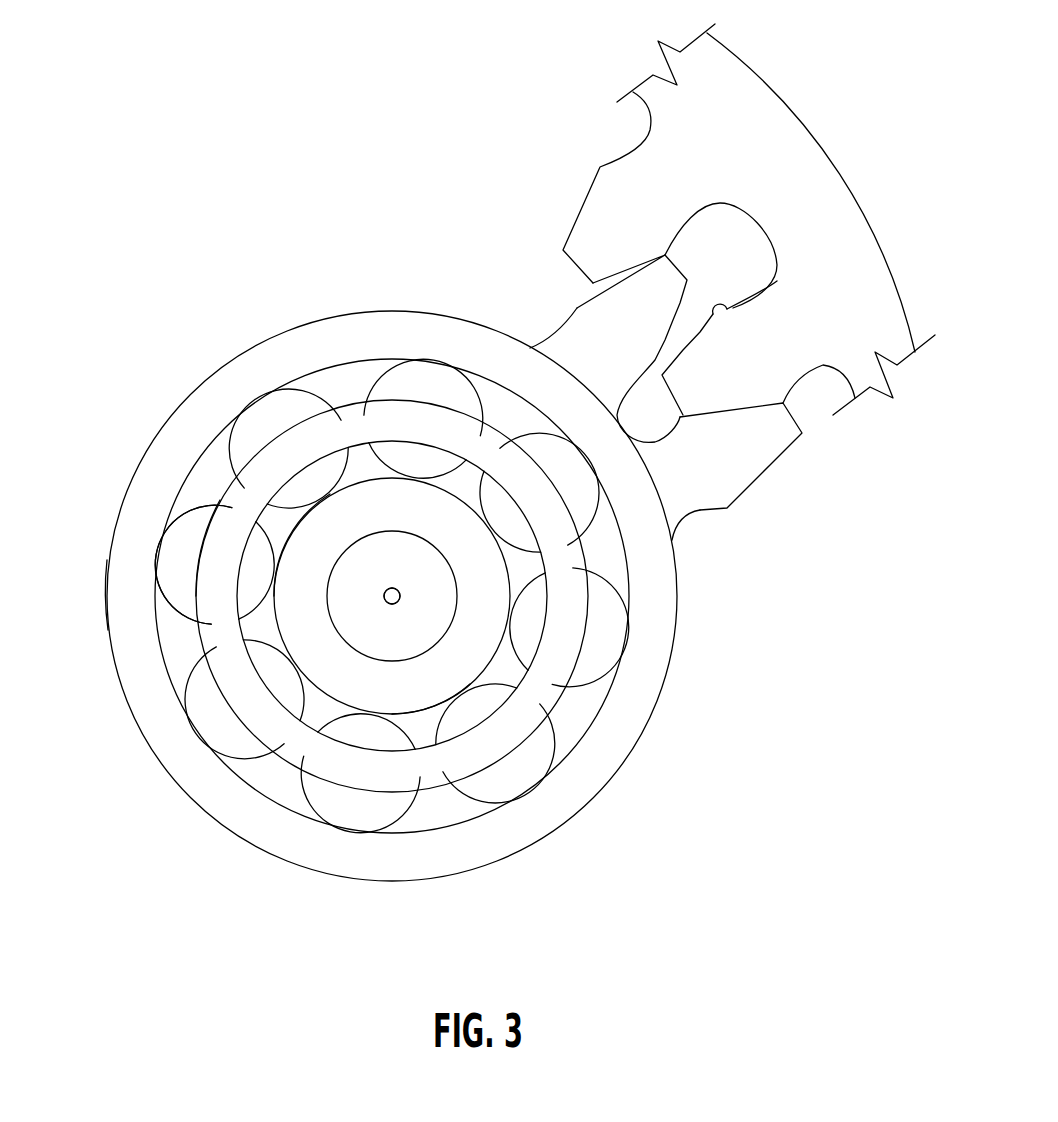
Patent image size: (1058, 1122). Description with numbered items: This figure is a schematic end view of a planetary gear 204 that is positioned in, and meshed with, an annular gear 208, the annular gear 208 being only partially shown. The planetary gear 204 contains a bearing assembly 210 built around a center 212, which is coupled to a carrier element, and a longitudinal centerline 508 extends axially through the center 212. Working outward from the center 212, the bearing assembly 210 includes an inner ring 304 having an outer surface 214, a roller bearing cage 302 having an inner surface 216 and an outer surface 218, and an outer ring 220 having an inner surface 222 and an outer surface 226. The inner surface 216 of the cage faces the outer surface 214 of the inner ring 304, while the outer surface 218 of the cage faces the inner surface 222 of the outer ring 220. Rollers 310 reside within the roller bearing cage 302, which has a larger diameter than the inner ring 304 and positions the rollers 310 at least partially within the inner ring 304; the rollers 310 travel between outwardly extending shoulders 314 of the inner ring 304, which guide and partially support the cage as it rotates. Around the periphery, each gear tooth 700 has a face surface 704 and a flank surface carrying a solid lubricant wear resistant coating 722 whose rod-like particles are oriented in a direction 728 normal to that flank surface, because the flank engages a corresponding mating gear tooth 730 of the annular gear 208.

The planetary gear 204 is at (348, 311).
The annular gear 208 is at (607, 125).
The bearing assembly 210 is at (578, 715).
The center 212 is at (388, 605).
The outer surface 214 is at (318, 700).
The inner surface 216 is at (422, 732).
The outer surface 218 is at (450, 780).
The outer ring 220 is at (185, 428).
The inner surface 222 is at (172, 656).
The outer surface 226 is at (105, 577).
The roller bearing cage 302 is at (212, 558).
The inner ring 304 is at (290, 618).
The rollers 310 is at (178, 572).
The outwardly extending shoulders 314 is at (330, 497).
The longitudinal centerline 508 is at (421, 582).
The gear tooth 700 is at (597, 291).
The face surface 704 is at (697, 330).
The solid lubricant wear resistant coating 722 is at (667, 343).
The direction 728 is at (777, 281).
The mating gear tooth 730 is at (733, 310).